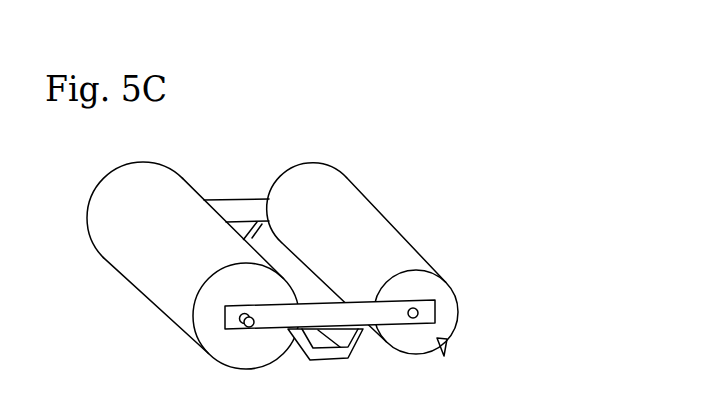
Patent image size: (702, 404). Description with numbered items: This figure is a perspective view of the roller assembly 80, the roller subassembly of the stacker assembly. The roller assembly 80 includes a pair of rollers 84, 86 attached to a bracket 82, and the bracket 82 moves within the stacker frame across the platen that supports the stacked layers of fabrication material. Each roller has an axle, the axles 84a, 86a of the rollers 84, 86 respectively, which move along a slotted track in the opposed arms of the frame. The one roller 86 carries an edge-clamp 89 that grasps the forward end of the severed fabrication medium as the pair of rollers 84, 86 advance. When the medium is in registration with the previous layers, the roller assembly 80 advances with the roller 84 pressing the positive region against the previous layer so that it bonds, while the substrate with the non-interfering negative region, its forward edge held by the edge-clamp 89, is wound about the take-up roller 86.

The roller assembly 80 is at (344, 268).
The bracket 82 is at (231, 194).
The roller 84 is at (138, 298).
The axle 84a is at (248, 328).
The roller 86 is at (364, 193).
The axle 86a is at (423, 306).
The edge-clamp 89 is at (451, 346).